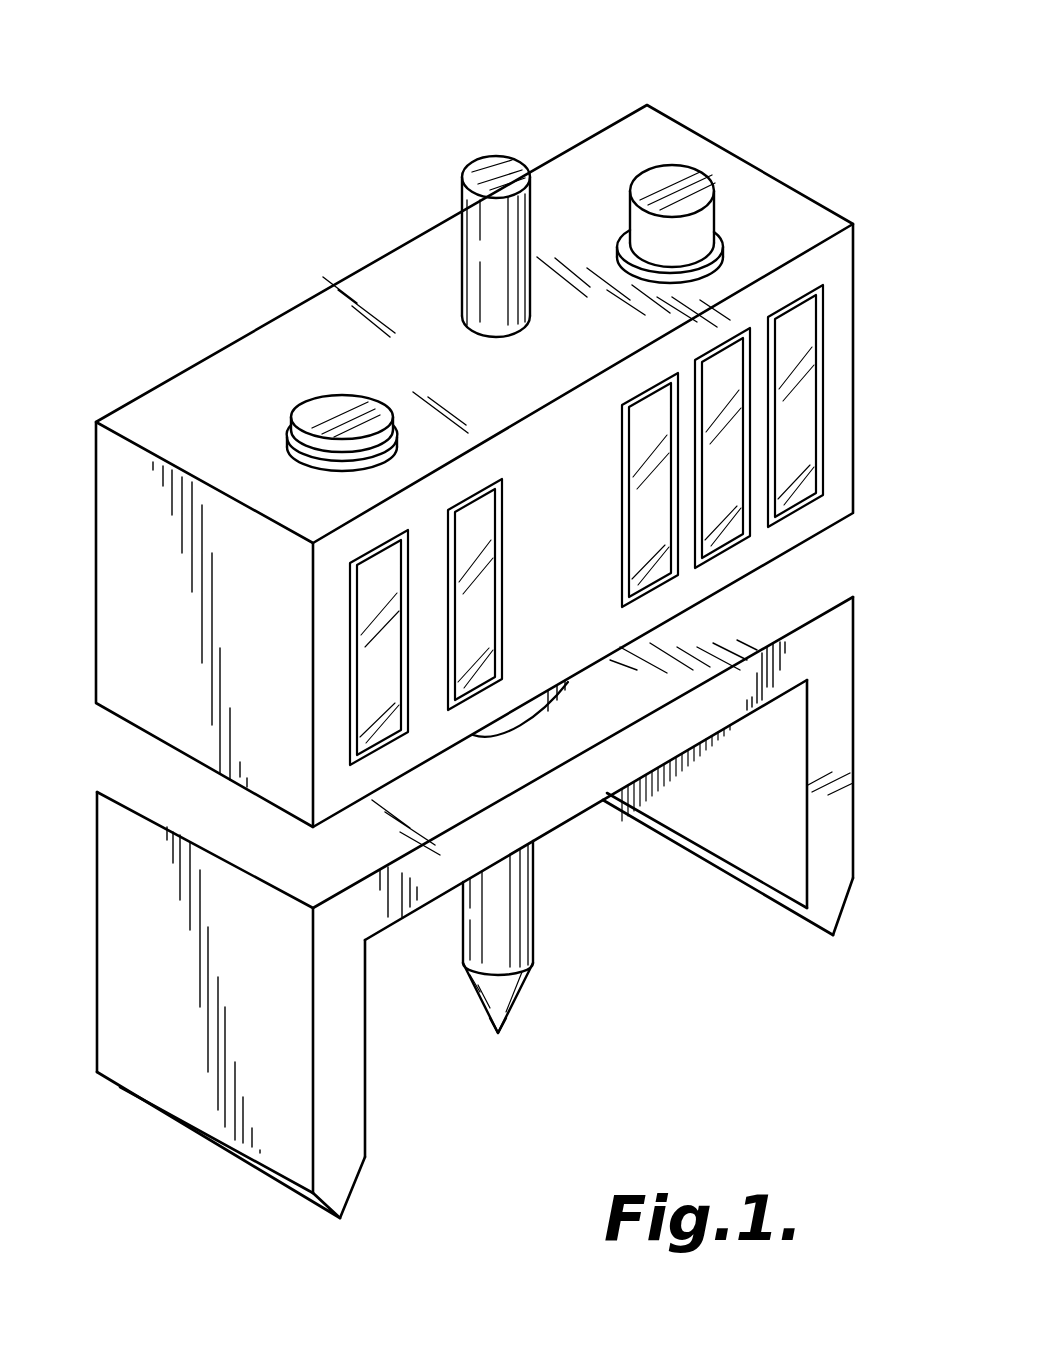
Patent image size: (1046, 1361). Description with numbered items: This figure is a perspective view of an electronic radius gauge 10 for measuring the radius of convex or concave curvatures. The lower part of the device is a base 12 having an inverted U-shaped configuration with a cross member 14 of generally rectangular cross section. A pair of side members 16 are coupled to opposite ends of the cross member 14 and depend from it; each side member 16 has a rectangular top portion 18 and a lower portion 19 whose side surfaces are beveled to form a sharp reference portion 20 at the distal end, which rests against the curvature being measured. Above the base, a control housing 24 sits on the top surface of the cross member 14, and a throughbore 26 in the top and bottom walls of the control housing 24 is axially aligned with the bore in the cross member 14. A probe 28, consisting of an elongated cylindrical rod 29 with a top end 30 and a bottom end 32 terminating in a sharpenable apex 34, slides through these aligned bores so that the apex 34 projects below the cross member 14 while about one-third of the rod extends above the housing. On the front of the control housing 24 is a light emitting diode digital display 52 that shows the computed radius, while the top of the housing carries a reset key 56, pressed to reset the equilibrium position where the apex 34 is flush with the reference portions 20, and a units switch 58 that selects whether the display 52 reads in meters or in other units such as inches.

The electronic radius gauge 10 is at (757, 90).
The base 12 is at (848, 595).
The cross member 14 is at (420, 912).
The side members 16 is at (858, 683).
The top portion 18 is at (122, 843).
The lower portion 19 is at (857, 878).
The reference portion 20 is at (830, 937).
The control housing 24 is at (854, 224).
The throughbore 26 is at (460, 328).
The probe 28 is at (473, 255).
The cylindrical rod 29 is at (533, 940).
The top end 30 is at (494, 160).
The bottom end 32 is at (517, 995).
The apex 34 is at (499, 1035).
The display 52 is at (803, 383).
The reset key 56 is at (715, 173).
The units switch 58 is at (322, 400).